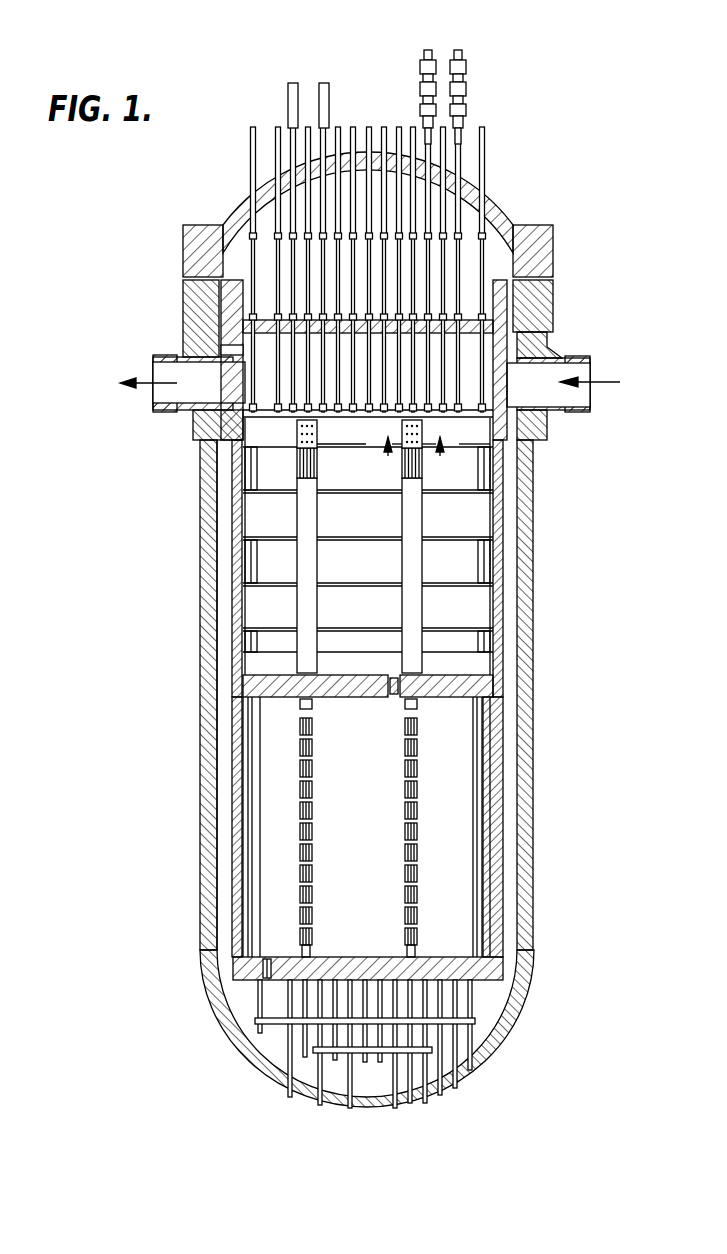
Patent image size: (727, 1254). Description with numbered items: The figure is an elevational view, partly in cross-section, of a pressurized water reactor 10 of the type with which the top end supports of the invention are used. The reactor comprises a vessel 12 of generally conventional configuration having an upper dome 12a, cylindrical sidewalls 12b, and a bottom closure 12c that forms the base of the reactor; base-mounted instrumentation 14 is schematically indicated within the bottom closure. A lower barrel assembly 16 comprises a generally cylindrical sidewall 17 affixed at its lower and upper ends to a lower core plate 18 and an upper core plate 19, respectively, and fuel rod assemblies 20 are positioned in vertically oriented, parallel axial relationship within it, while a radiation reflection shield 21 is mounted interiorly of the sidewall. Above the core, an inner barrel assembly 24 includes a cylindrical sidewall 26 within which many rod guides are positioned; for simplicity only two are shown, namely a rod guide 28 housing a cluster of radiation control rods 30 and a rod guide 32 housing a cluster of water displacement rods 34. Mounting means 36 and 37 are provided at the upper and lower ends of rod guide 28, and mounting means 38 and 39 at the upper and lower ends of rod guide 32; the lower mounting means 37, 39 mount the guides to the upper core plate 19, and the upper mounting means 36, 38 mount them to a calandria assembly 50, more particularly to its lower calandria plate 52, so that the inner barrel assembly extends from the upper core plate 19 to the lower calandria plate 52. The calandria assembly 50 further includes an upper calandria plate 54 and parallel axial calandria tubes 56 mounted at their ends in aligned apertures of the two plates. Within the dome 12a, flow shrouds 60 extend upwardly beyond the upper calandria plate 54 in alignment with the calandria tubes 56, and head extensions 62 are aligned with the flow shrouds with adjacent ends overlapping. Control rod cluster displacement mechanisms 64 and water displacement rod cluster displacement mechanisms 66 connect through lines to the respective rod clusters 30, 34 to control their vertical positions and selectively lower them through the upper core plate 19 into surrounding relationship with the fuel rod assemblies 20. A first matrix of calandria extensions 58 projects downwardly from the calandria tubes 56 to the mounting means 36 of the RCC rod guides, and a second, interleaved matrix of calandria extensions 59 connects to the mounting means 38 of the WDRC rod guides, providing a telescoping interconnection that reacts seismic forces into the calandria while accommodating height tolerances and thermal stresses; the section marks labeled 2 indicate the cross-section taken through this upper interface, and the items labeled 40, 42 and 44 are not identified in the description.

The pressurized water reactor 10 is at (607, 226).
The vessel 12 is at (572, 330).
The upper dome 12a is at (500, 218).
The cylindrical sidewalls 12b is at (533, 484).
The bottom closure 12c is at (500, 1020).
The base-mounted instrumentation 14 is at (442, 1045).
The lower barrel assembly 16 is at (220, 750).
The cylindrical sidewall 17 is at (230, 790).
The lower core plate 18 is at (233, 973).
The upper core plate 19 is at (242, 685).
The fuel rod assemblies 20 is at (398, 852).
The radiation reflection shield 21 is at (243, 835).
The inner barrel assembly 24 is at (232, 640).
The cylindrical sidewall 26 is at (237, 593).
The rod guide 28 is at (318, 521).
The radiation control rods 30 is at (318, 463).
The rod guide 32 is at (422, 522).
The water displacement rods 34 is at (425, 462).
The mounting means 36 is at (317, 423).
The mounting means 38 is at (422, 423).
The mounting means 37 is at (247, 660).
The mounting means 39 is at (437, 662).
The support columns 40 is at (485, 641).
The upper internals former plates 42 is at (485, 567).
The upper core barrel flange 44 is at (488, 467).
The calandria assembly 50 is at (228, 345).
The lower calandria plate 52 is at (265, 420).
The upper calandria plate 54 is at (222, 340).
The calandria tubes 56 is at (225, 412).
The calandria extensions 58 is at (250, 372).
The calandria extensions 59 is at (443, 412).
The flow shrouds 60 is at (460, 263).
The head extensions 62 is at (483, 163).
The control rod cluster displacement mechanisms 64 is at (459, 50).
The water displacement rod cluster displacement mechanisms 66 is at (322, 100).
The section line 2- 2 is at (403, 445).